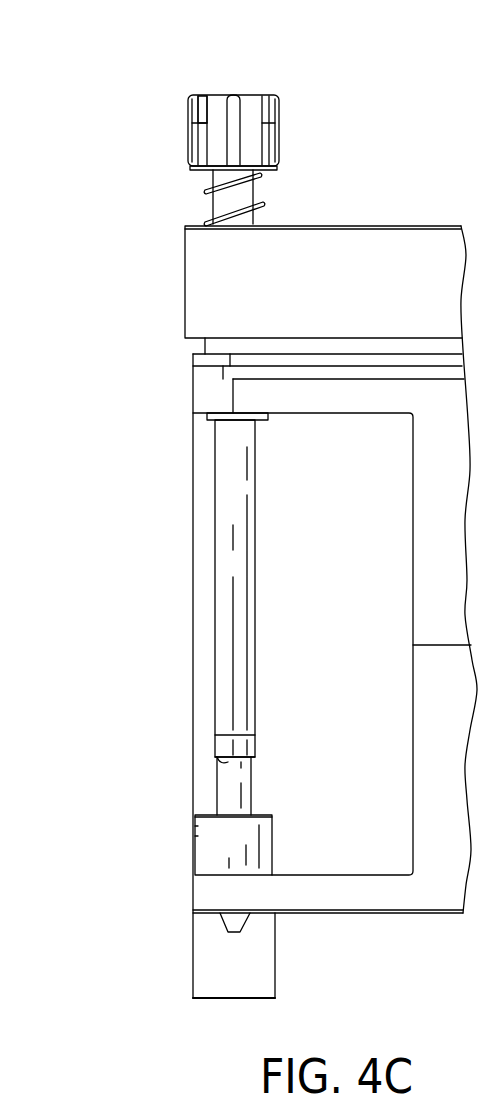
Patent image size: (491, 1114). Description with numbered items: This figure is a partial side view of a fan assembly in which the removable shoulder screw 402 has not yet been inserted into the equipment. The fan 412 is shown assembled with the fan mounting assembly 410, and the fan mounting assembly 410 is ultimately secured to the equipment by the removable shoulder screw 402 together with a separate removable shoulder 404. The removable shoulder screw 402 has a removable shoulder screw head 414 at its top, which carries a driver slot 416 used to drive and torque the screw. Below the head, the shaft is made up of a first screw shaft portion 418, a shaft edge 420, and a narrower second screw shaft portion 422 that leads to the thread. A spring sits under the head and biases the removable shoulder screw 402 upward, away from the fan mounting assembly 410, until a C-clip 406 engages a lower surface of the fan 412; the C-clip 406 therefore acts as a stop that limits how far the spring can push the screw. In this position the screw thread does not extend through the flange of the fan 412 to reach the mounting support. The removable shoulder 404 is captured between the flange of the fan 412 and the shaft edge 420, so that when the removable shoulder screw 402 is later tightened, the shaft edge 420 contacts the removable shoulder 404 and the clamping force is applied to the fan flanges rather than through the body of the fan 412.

The removable shoulder screw 402 is at (160, 126).
The removable shoulder 404 is at (215, 851).
The C-clip 406 is at (234, 418).
The fan mounting assembly 410 is at (192, 300).
The fan 412 is at (213, 396).
The removable shoulder screw head 414 is at (265, 143).
The driver slot 416 is at (203, 107).
The first screw shaft portion 418 is at (232, 565).
The shaft edge 420 is at (218, 767).
The second screw shaft portion 422 is at (226, 793).